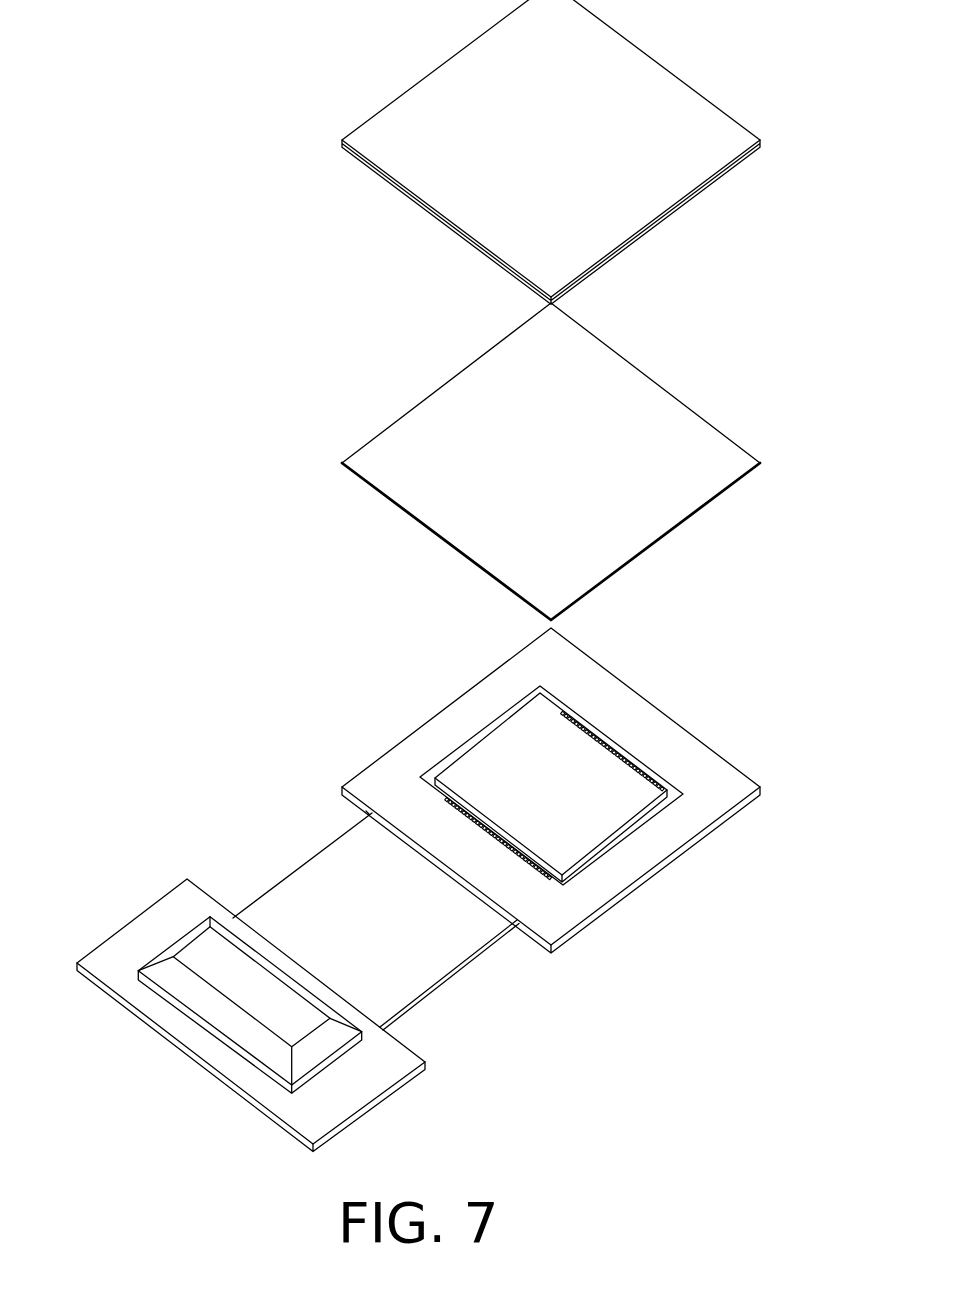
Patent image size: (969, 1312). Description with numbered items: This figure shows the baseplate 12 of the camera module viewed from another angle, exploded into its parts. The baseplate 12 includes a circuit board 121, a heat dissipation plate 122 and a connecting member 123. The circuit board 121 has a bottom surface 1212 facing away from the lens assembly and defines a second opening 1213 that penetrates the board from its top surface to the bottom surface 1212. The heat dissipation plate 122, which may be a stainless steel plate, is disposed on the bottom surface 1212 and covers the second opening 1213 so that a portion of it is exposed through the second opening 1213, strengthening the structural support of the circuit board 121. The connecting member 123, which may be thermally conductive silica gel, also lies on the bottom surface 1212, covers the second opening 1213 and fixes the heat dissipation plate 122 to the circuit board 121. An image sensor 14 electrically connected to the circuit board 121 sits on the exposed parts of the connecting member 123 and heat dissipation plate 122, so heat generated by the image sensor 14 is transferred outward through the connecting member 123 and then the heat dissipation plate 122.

The baseplate 12 is at (567, 476).
The circuit board 121 is at (537, 720).
The heat dissipation plate 122 is at (593, 225).
The connecting member 123 is at (665, 437).
The bottom surface 1212 is at (388, 787).
The second opening 1213 is at (645, 768).
The image sensor 14 is at (487, 753).